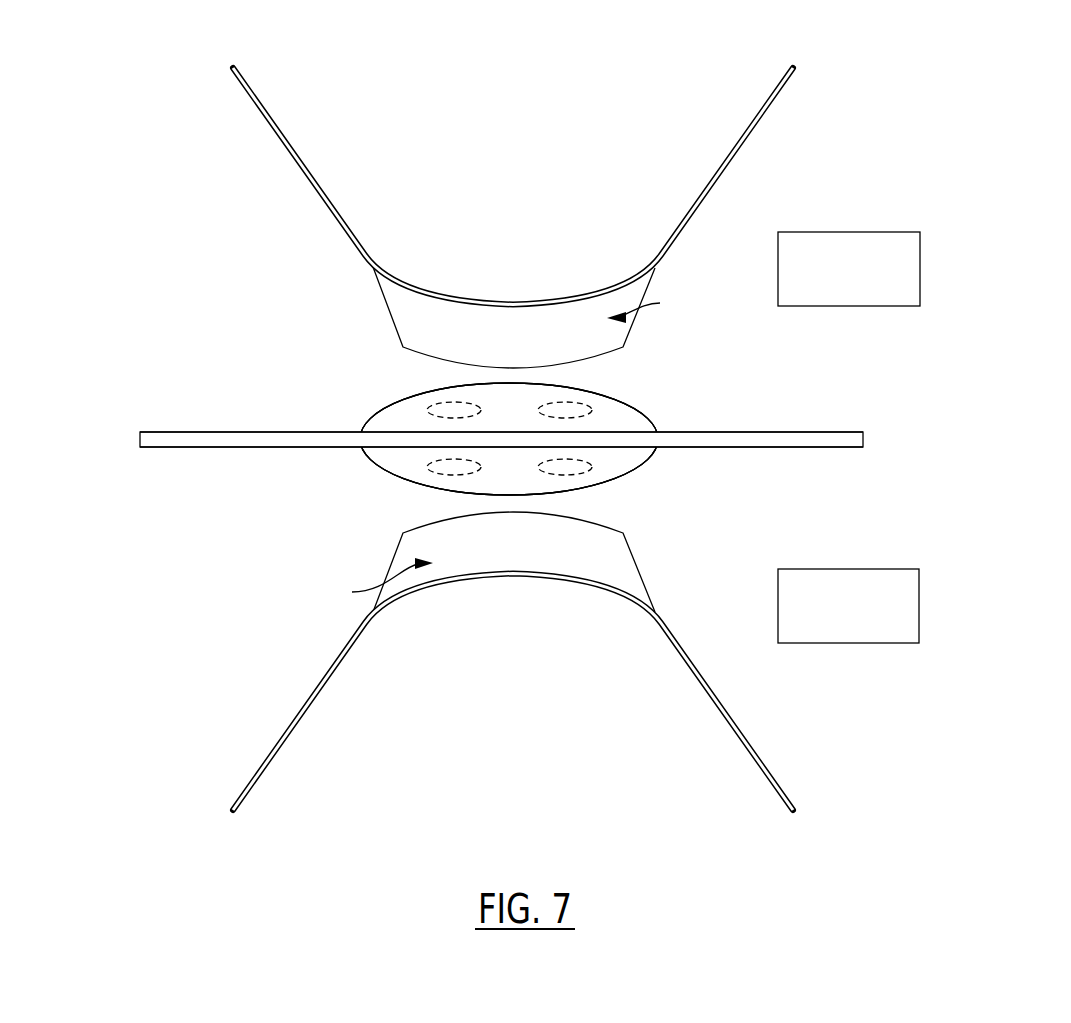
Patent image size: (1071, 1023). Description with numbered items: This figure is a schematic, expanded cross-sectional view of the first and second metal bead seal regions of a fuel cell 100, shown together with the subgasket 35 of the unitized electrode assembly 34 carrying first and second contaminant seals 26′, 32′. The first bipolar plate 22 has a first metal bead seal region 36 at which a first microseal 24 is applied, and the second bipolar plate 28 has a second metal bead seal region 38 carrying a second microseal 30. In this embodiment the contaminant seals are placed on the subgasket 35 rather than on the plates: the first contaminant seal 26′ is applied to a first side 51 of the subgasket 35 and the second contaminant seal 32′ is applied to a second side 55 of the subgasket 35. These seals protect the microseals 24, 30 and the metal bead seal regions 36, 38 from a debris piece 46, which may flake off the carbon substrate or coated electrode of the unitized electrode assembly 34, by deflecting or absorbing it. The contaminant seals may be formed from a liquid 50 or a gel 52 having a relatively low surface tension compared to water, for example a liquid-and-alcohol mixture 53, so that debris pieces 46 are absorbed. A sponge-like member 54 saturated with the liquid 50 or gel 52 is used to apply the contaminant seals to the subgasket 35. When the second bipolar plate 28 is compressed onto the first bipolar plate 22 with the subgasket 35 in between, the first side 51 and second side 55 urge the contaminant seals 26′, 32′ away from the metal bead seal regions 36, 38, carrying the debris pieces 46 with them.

The fuel cell 100 is at (150, 150).
The first bipolar plate 22 is at (745, 738).
The first microseal 24 is at (623, 558).
The first contaminant seal 26′ is at (637, 458).
The second bipolar plate 28 is at (280, 143).
The second microseal 30 is at (407, 320).
The second contaminant seal 32′ is at (585, 400).
The unitized electrode assembly 34 is at (807, 443).
The subgasket 35 is at (648, 442).
The first metal bead seal region 36 is at (381, 582).
The second metal bead seal region 38 is at (644, 307).
The debris piece 46 is at (418, 407).
The liquid 50 is at (456, 439).
The first side of the subgasket 51 is at (705, 448).
The gel 52 is at (509, 439).
The liquid-and-alcohol mixture 53 is at (373, 421).
The member 54 is at (838, 232).
The second side of the subgasket 55 is at (697, 432).